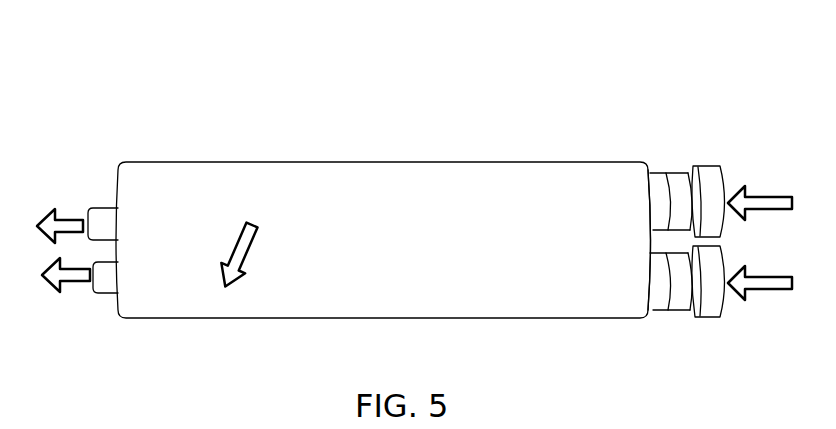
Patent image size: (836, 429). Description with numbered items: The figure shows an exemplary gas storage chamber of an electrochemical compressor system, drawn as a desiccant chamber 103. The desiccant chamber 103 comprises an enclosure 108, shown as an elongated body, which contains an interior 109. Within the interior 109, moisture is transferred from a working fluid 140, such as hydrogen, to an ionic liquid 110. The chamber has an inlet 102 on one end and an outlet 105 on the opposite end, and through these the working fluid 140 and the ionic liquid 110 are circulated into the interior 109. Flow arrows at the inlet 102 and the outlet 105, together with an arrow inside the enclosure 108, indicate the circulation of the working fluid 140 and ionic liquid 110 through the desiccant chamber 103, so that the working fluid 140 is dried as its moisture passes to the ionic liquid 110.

The inlet 102 is at (684, 183).
The desiccant chamber 103 is at (391, 107).
The outlet 105 is at (97, 220).
The enclosure 108 is at (335, 188).
The interior 109 is at (488, 197).
The ionic liquid 110 is at (245, 190).
The working fluid 140 is at (187, 188).